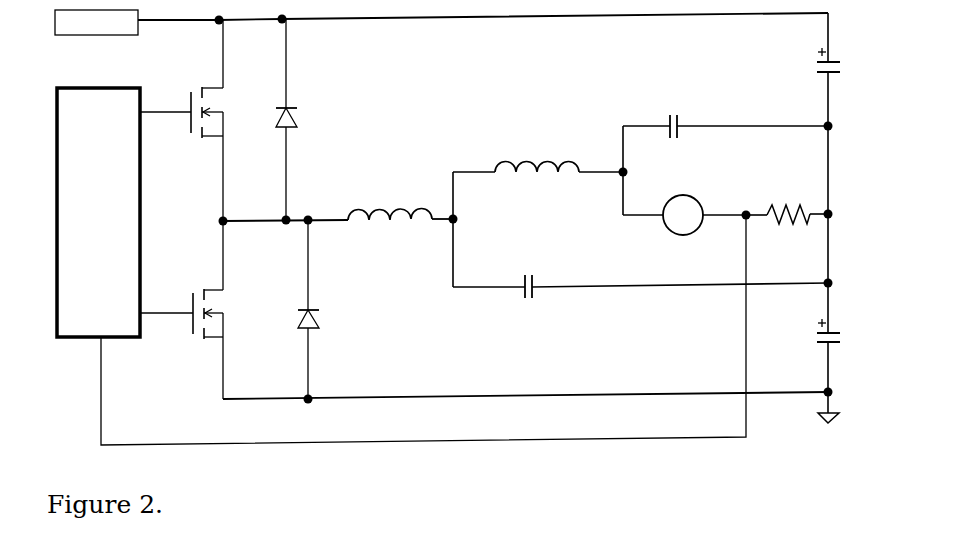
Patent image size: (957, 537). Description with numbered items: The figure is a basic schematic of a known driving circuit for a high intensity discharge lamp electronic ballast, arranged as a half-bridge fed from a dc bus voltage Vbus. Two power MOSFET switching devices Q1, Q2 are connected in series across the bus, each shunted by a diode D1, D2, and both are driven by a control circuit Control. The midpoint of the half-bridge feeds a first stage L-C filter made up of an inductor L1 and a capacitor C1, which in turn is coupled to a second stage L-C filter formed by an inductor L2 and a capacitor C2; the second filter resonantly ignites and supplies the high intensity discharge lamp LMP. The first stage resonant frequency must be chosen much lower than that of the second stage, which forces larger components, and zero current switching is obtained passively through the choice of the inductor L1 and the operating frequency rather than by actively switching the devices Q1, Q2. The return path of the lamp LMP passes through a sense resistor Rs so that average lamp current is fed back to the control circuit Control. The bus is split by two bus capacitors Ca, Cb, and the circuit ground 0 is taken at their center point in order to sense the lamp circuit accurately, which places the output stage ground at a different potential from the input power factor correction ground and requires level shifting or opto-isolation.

The dc bus voltage Vbus is at (96, 22).
The control circuit Control is at (401, 266).
The switching device Q1 is at (190, 120).
The switching device Q2 is at (190, 310).
The diode D1 is at (301, 119).
The diode D2 is at (324, 309).
The inductor L1 is at (400, 201).
The inductor L2 is at (538, 155).
The capacitor C1 is at (640, 272).
The capacitor C2 is at (725, 114).
The high intensity discharge lamp LMP is at (684, 224).
The sense resistor Rs is at (787, 200).
The bus capacitor Ca is at (812, 63).
The bus capacitor Cb is at (807, 333).
The circuit ground 0 is at (835, 414).